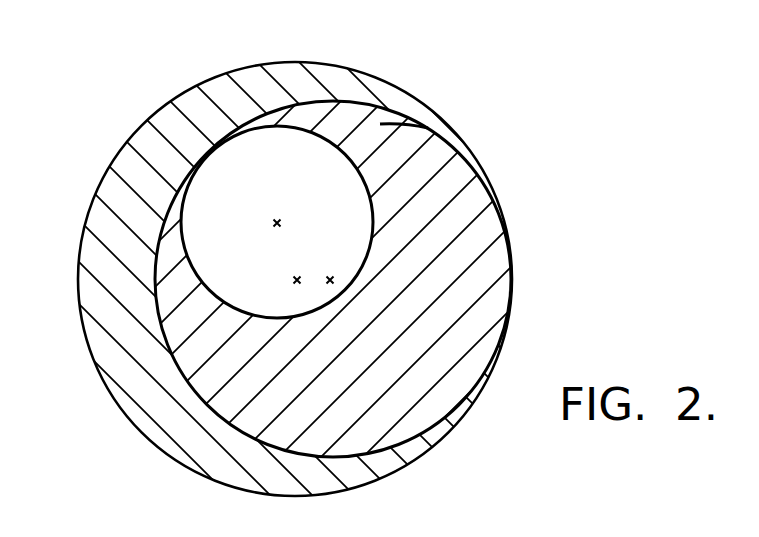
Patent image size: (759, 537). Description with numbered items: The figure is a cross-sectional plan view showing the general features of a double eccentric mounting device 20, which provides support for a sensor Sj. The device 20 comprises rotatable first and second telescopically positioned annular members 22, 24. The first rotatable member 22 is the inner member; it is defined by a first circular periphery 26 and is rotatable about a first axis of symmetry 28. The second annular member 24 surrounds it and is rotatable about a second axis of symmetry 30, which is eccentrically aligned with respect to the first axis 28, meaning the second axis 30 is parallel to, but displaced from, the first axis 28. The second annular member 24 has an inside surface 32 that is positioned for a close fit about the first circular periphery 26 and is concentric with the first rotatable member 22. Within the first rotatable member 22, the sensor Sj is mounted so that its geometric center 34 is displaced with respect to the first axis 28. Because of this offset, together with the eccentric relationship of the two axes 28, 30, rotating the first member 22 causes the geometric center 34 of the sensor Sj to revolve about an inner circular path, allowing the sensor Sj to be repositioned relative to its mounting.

The double eccentric mounting device 20 is at (305, 268).
The first rotatable member 22 is at (305, 268).
The second annular member 24 is at (300, 73).
The first circular periphery 26 is at (408, 124).
The first axis of symmetry 28 is at (337, 273).
The second axis of symmetry 30 is at (291, 277).
The inside surface 32 is at (402, 112).
The geometric center 34 is at (278, 217).
The sensor Sj is at (208, 187).